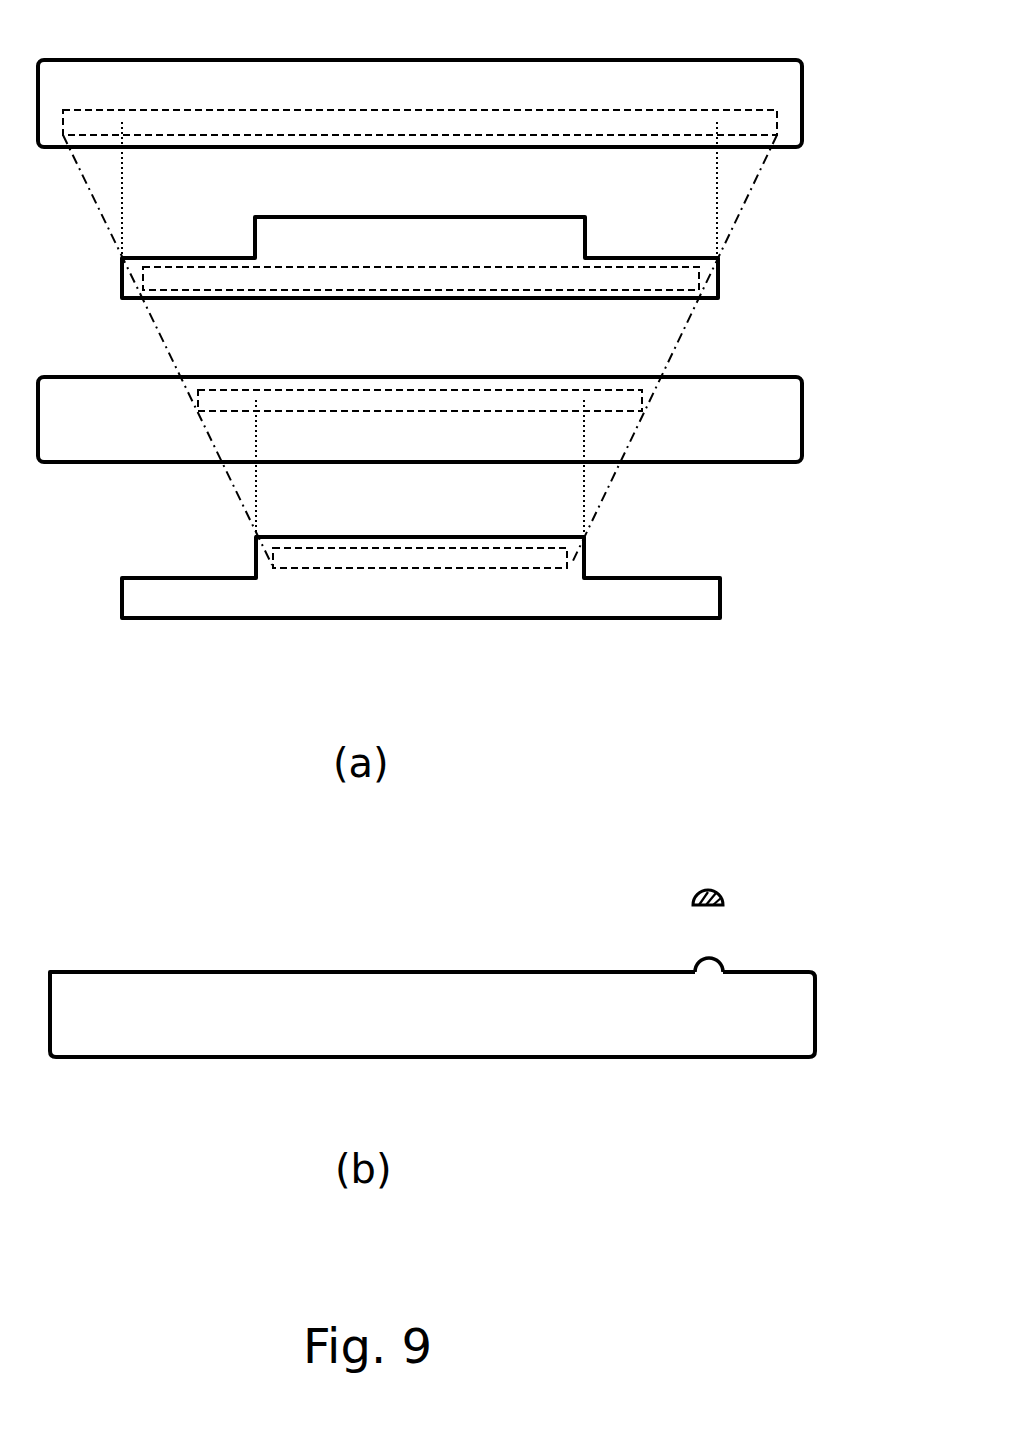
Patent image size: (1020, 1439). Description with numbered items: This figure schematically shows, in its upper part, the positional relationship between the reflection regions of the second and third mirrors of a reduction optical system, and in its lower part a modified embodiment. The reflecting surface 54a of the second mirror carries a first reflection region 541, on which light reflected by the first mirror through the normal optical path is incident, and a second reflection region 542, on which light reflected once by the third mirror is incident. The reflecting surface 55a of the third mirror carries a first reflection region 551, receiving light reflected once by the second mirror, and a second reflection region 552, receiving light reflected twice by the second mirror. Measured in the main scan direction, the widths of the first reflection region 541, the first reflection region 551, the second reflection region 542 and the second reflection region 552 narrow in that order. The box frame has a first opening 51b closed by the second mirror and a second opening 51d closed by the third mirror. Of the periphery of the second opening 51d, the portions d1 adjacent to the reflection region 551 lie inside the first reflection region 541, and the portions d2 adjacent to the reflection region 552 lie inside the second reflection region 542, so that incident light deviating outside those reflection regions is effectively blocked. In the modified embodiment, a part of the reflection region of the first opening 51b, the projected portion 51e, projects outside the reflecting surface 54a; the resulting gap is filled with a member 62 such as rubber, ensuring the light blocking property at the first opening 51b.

The reflecting surface of the second mirror 54a is at (505, 62).
The first reflection region of the second mirror 541 is at (648, 115).
The second reflection region of the second mirror 542 is at (543, 397).
The reflecting surface of the third mirror 55a is at (505, 219).
The first reflection region of the third mirror 551 is at (613, 268).
The second reflection region of the third mirror 552 is at (518, 556).
The first opening 51b is at (315, 147).
The second opening 51d is at (315, 298).
The portions of the periphery of the second opening adjacent to reflection region 55 d1 is at (122, 292).
The portions of the periphery of the second opening adjacent to reflection region 55 d2 is at (268, 576).
The projected portion of the opening region 51e is at (718, 958).
The member 62 is at (692, 900).